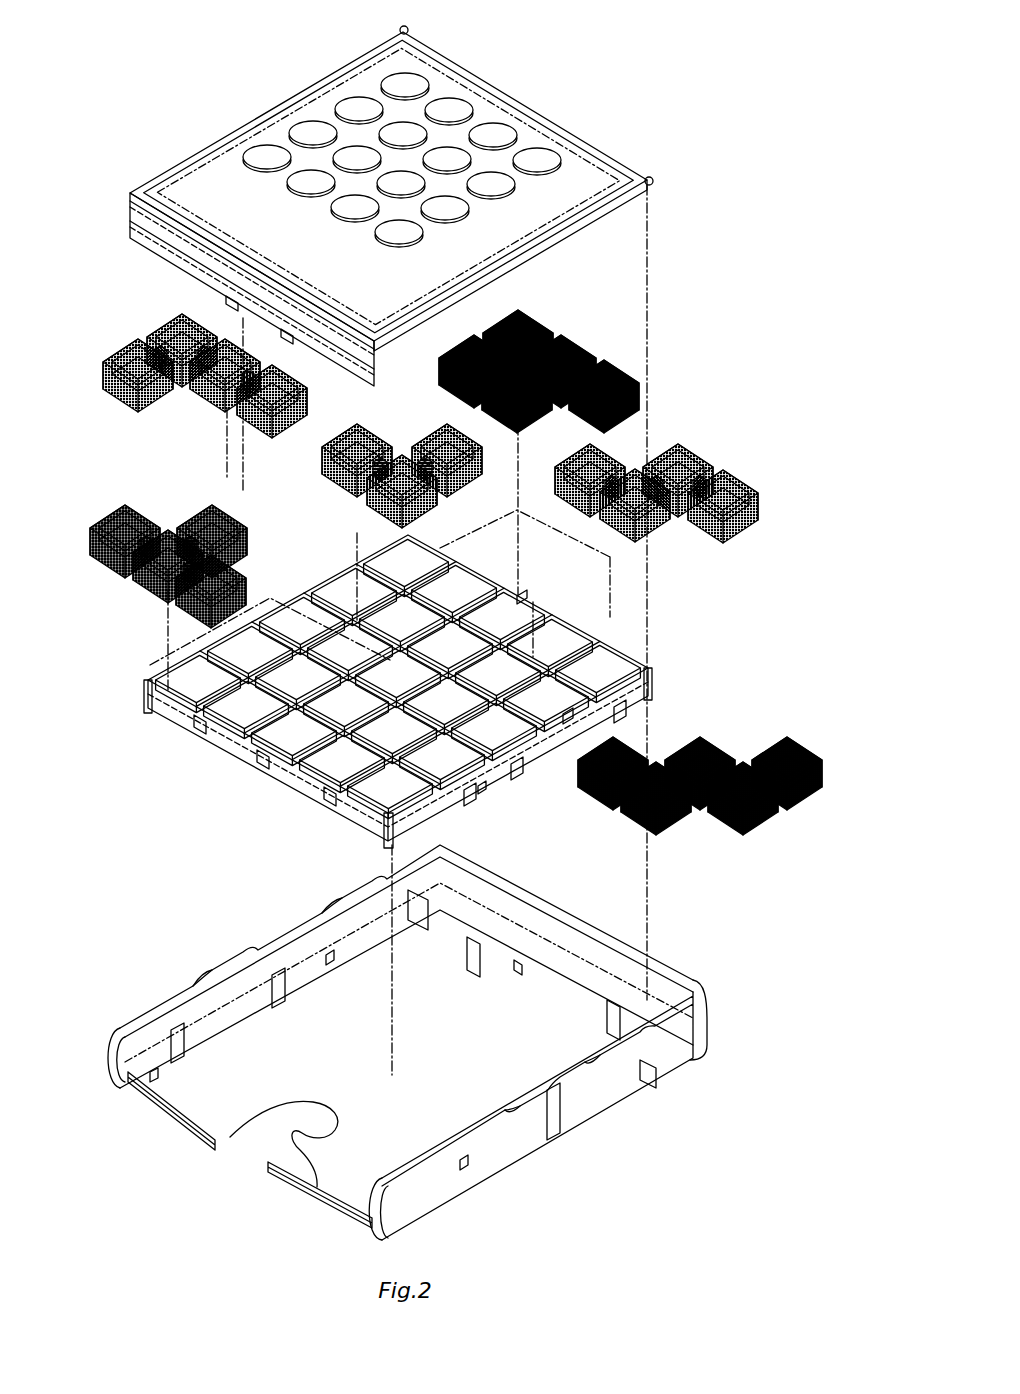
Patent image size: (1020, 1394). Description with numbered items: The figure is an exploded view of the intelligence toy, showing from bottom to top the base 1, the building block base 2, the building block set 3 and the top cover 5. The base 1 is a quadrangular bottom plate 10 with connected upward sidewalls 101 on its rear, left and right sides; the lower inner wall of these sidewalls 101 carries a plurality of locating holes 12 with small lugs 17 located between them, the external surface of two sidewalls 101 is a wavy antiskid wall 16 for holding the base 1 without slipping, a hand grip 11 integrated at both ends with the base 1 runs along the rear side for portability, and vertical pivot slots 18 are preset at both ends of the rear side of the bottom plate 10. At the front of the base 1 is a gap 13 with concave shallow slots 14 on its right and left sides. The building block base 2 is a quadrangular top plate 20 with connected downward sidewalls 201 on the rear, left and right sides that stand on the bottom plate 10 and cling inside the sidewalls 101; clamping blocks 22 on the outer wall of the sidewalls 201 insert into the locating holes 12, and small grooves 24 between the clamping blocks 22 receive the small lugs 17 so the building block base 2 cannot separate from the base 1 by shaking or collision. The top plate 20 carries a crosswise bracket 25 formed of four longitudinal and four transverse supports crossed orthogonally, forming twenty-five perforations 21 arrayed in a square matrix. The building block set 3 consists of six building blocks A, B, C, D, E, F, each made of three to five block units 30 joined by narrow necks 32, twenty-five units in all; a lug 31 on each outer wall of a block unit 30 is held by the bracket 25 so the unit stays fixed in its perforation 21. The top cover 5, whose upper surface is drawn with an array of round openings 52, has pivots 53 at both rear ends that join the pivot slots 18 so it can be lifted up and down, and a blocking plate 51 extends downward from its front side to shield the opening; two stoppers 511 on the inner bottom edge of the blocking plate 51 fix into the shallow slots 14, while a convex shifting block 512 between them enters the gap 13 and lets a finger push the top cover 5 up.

The base 1 is at (717, 1070).
The bottom plate 10 is at (363, 1157).
The sidewalls 101 is at (130, 1050).
The hand grip 11 is at (533, 898).
The locating holes 12 is at (178, 1035).
The gap 13 is at (318, 1187).
The shallow slots 14 is at (197, 1138).
The antiskid wall 16 is at (217, 960).
The small lugs 17 is at (330, 962).
The pivot slots 18 is at (412, 920).
The building block base 2 is at (650, 683).
The top plate 20 is at (215, 720).
The sidewalls 201 is at (150, 697).
The perforations 21 is at (340, 732).
The clamping blocks 22 is at (498, 580).
The small grooves 24 is at (522, 600).
The bracket 25 is at (320, 625).
The building block set 3 is at (768, 424).
The block units 30 is at (105, 368).
The lug 31 is at (430, 578).
The narrow neck 32 is at (190, 380).
The top cover 5 is at (530, 130).
The blocking plate 51 is at (150, 243).
The stoppers 511 is at (185, 150).
The convex shifting block 512 is at (230, 282).
The hole 52 is at (357, 105).
The pivots 53 is at (410, 28).
The building block A is at (432, 455).
The building block B is at (120, 342).
The building block C is at (112, 503).
The building block D is at (525, 320).
The building block E is at (788, 745).
The building block F is at (690, 462).